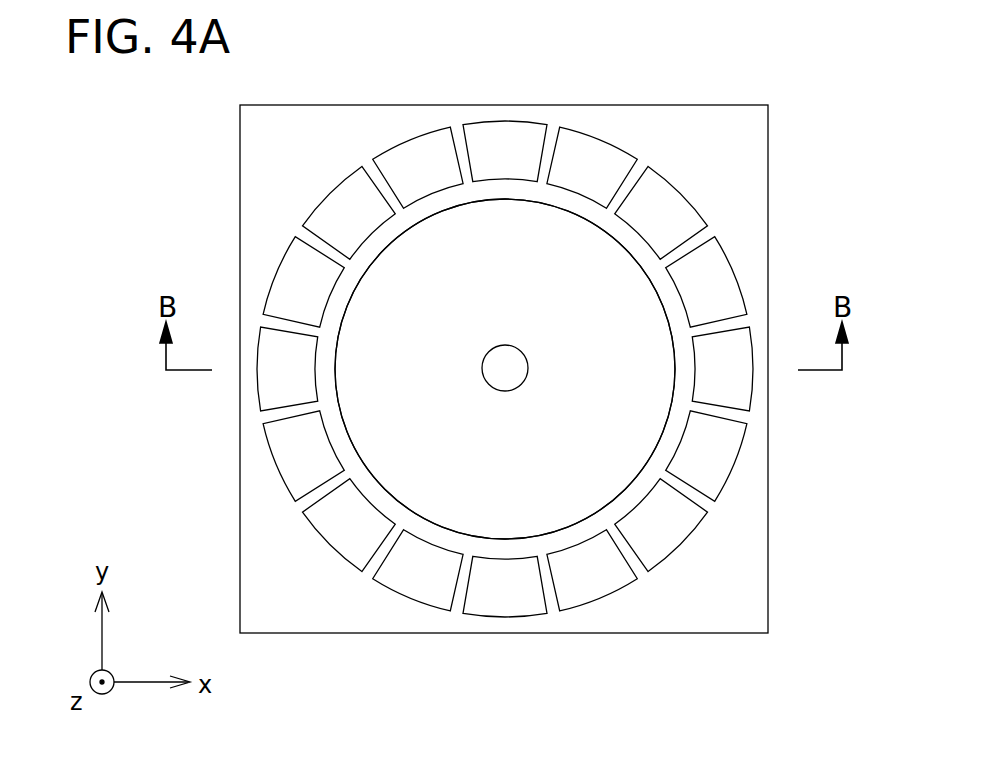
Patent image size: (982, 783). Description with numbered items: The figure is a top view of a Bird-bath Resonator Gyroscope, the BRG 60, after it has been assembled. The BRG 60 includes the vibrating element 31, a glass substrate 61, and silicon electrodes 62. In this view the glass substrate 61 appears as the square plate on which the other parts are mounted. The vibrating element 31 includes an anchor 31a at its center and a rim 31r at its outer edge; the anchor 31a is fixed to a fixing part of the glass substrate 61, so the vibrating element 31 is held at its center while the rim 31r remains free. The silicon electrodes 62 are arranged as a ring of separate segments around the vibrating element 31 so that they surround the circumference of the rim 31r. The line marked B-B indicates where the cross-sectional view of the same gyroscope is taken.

The BRG 60 is at (862, 52).
The glass substrate 61 is at (620, 615).
The silicon electrodes 62 is at (272, 385).
The vibrating element 31 is at (433, 551).
The anchor 31a is at (512, 380).
The rim 31r is at (632, 402).